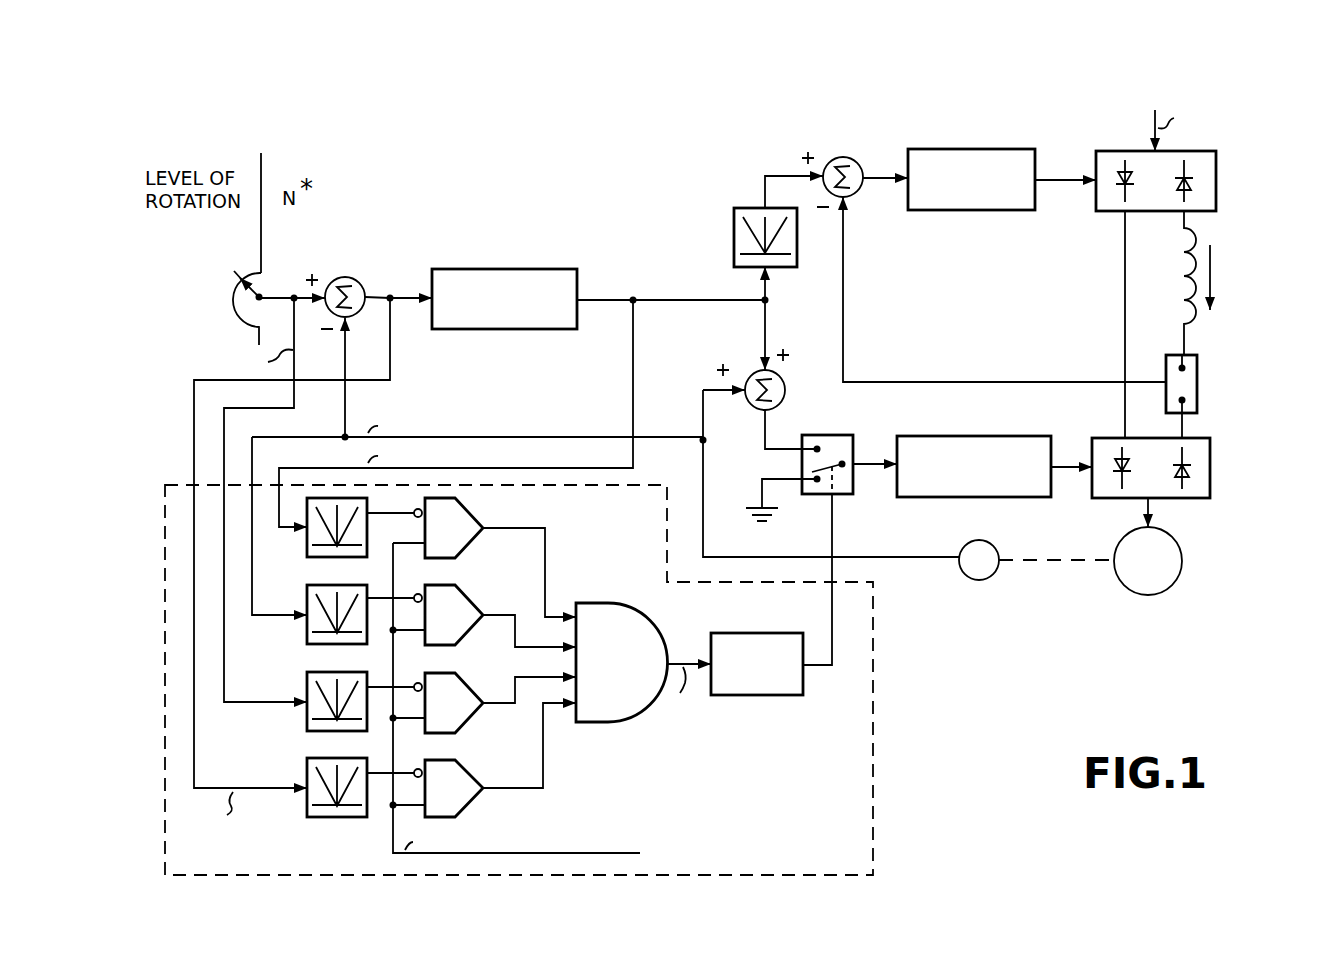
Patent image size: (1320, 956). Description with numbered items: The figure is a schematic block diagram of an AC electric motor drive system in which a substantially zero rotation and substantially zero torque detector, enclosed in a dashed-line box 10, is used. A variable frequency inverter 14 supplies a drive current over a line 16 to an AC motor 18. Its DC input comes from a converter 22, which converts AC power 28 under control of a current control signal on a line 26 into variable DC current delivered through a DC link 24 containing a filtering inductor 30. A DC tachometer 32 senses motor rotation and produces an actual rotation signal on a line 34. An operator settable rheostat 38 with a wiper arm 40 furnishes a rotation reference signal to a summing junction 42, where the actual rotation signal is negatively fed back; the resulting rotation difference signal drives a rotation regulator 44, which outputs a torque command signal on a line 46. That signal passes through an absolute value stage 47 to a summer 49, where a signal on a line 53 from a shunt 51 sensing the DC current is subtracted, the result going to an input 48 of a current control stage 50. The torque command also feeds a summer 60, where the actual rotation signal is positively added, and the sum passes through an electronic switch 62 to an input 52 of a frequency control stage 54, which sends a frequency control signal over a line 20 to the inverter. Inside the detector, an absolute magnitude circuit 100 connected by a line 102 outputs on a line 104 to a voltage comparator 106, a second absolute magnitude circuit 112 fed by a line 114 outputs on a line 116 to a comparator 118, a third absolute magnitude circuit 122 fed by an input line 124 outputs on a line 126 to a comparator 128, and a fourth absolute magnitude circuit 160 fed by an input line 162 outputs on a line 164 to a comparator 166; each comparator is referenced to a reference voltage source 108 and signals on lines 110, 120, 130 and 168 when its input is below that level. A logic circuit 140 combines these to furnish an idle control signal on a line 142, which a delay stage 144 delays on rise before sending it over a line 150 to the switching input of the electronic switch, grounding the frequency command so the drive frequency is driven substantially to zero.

The dashed-line box 10 is at (878, 661).
The variable frequency inverter 14 is at (1212, 466).
The line 16 is at (1155, 506).
The AC motor 18 is at (1183, 568).
The line 20 is at (1064, 462).
The converter 22 is at (1218, 192).
The DC link 24 is at (1228, 262).
The line 26 is at (1060, 177).
The AC power 28 is at (1221, 130).
The inductor 30 is at (1177, 280).
The DC tachometer 32 is at (999, 549).
The line 34 is at (923, 557).
The operator settable rheostat 38 is at (229, 297).
The wiper arm 40 is at (259, 281).
The summing junction 42 is at (354, 278).
The rotation regulator 44 is at (481, 269).
The line 46 is at (614, 305).
The absolute value stage 47 is at (735, 209).
The input 48 is at (882, 184).
The summer 49 is at (844, 162).
The current control stage 50 is at (974, 149).
The shunt 51 is at (1198, 383).
The input 52 is at (870, 462).
The line 53 is at (1055, 386).
The frequency control stage 54 is at (979, 435).
The summer 60 is at (751, 408).
The electronic switch 62 is at (824, 436).
The absolute magnitude circuit 100 is at (325, 560).
The line 102 is at (632, 392).
The output line 104 is at (395, 517).
The voltage comparator 106 is at (468, 519).
The reference voltage source 108 is at (526, 698).
The line 110 is at (546, 543).
The second absolute magnitude circuit 112 is at (325, 647).
The line 114 is at (256, 618).
The output line 116 is at (404, 597).
The voltage comparator 118 is at (468, 601).
The output 120 is at (508, 620).
The third absolute magnitude circuit 122 is at (325, 734).
The input line 124 is at (235, 705).
The output line 126 is at (419, 685).
The voltage comparator 128 is at (472, 704).
The output line 130 is at (510, 706).
The logic circuit 140 is at (630, 592).
The line 142 is at (681, 659).
The delay stage 144 is at (792, 622).
The line 150 is at (832, 543).
The fourth absolute magnitude circuit 160 is at (325, 820).
The input line 162 is at (254, 788).
The output line 164 is at (416, 769).
The voltage comparator 166 is at (468, 783).
The output line 168 is at (498, 792).